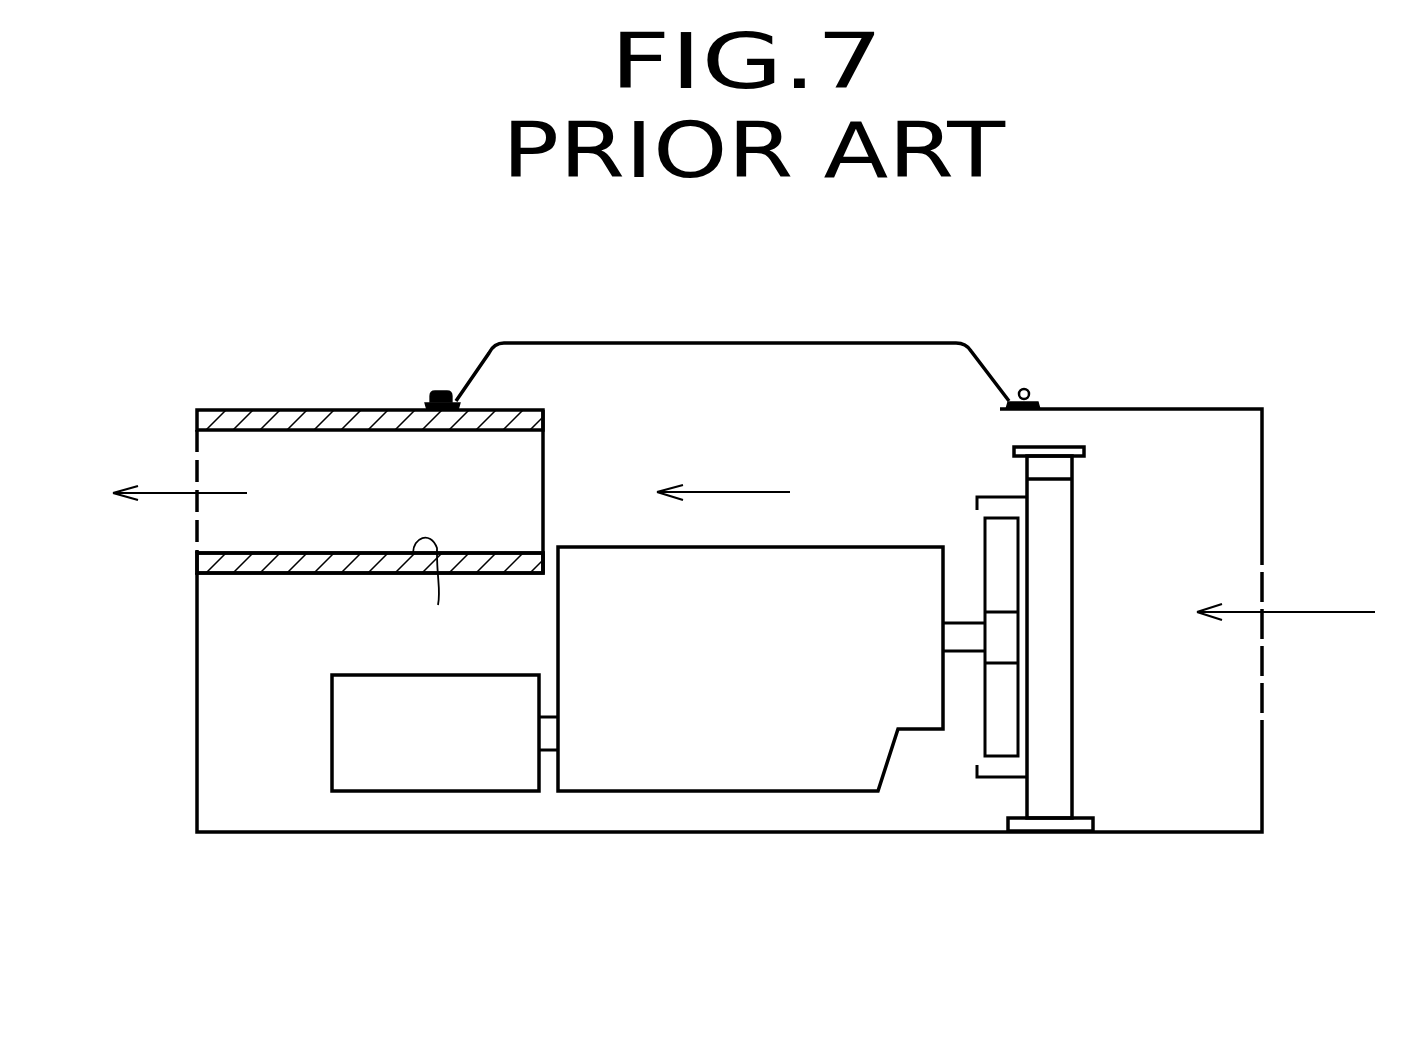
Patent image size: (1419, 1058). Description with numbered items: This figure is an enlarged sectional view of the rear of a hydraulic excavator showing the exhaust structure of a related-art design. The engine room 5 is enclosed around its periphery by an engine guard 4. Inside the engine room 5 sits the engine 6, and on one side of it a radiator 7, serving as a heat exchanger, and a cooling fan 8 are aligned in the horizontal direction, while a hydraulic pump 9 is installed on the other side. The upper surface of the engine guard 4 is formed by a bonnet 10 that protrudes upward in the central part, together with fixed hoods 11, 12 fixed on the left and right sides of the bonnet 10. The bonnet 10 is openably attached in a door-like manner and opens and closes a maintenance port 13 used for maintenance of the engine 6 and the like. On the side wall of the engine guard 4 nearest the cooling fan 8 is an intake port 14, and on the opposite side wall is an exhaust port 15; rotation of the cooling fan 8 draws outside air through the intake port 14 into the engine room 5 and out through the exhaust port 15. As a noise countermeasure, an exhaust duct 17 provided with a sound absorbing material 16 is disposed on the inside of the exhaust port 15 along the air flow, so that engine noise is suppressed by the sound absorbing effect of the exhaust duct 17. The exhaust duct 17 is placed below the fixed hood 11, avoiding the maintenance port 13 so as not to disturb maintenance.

The engine guard 4 is at (1131, 394).
The engine room 5 is at (882, 503).
The engine 6 is at (708, 773).
The radiator 7 is at (1072, 728).
The cooling fan 8 is at (1000, 760).
The hydraulic pump 9 is at (422, 791).
The bonnet 10 is at (781, 355).
The fixed hood 11 is at (323, 410).
The fixed hood 12 is at (1072, 407).
The maintenance port 13 is at (636, 395).
The intake port 14 is at (1262, 708).
The exhaust port 15 is at (196, 517).
The sound absorbing material 16 is at (435, 595).
The exhaust duct 17 is at (288, 573).